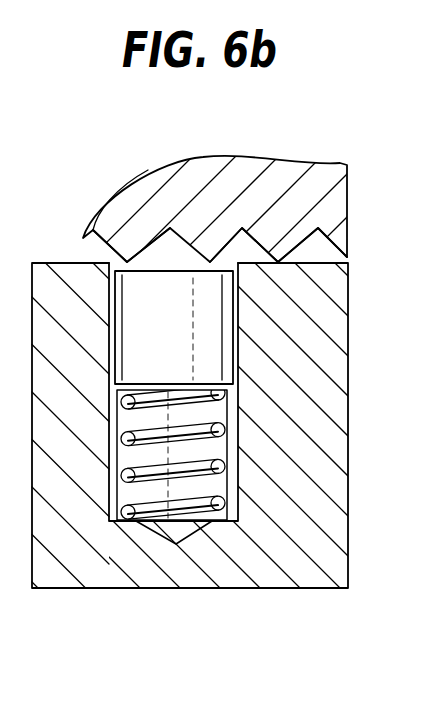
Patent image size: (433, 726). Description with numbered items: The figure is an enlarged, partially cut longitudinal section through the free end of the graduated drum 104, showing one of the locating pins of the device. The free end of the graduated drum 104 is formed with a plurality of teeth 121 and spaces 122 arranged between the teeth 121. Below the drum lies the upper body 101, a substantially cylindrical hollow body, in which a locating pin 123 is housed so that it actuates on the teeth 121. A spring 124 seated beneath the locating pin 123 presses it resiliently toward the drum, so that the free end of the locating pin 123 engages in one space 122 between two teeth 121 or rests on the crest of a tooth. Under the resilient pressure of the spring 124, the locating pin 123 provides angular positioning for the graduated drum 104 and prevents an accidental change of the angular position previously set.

The graduated drum 104 is at (327, 172).
The teeth 121 is at (128, 247).
The spaces 122 is at (318, 247).
The upper body 101 is at (138, 560).
The locating pin 123 is at (174, 346).
The spring 124 is at (183, 480).